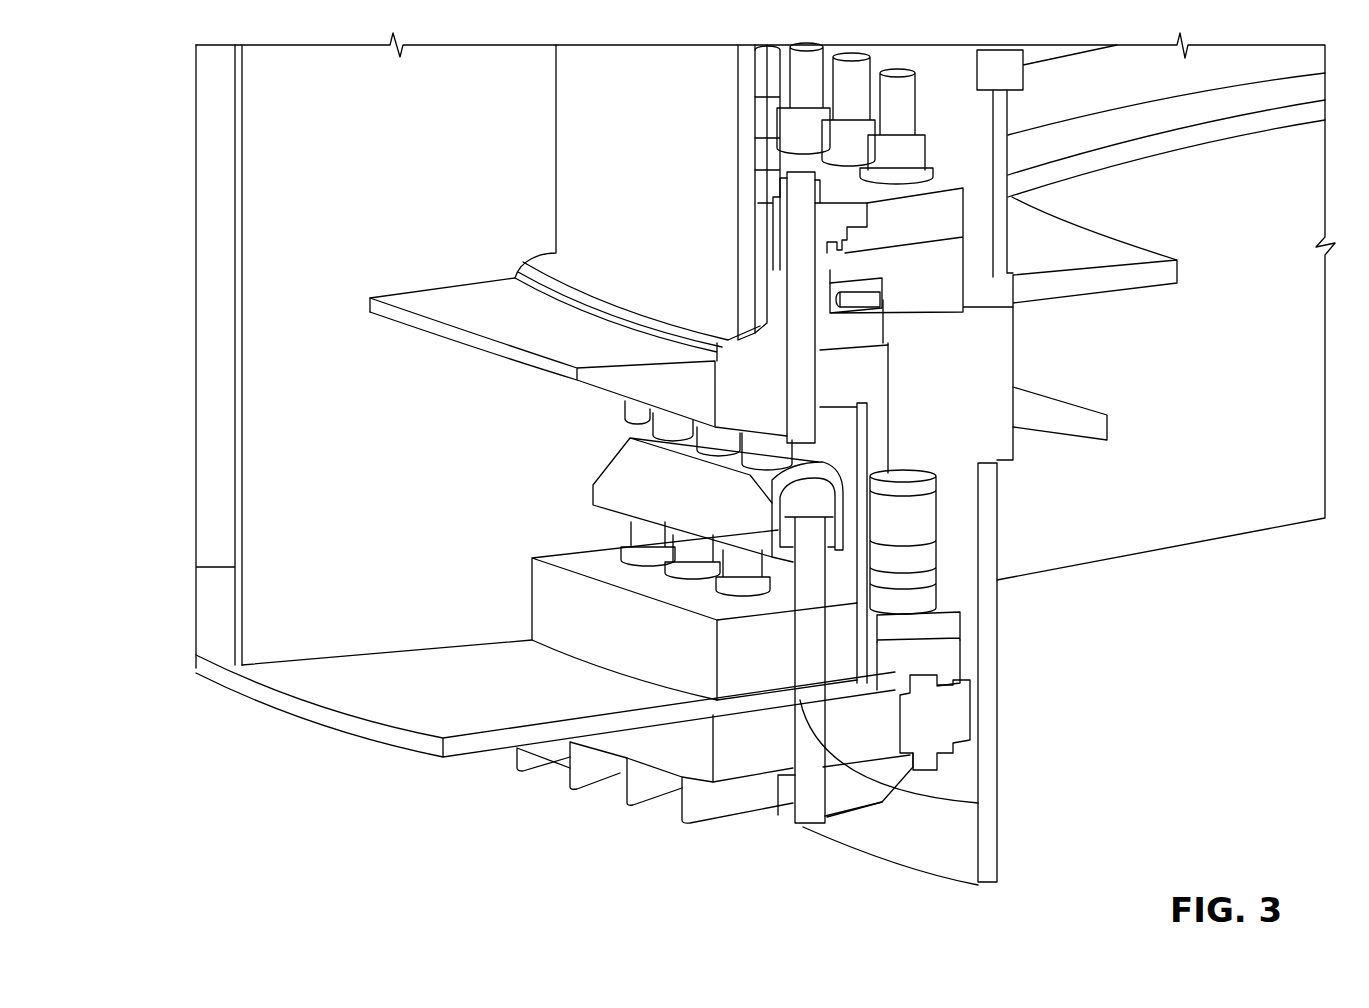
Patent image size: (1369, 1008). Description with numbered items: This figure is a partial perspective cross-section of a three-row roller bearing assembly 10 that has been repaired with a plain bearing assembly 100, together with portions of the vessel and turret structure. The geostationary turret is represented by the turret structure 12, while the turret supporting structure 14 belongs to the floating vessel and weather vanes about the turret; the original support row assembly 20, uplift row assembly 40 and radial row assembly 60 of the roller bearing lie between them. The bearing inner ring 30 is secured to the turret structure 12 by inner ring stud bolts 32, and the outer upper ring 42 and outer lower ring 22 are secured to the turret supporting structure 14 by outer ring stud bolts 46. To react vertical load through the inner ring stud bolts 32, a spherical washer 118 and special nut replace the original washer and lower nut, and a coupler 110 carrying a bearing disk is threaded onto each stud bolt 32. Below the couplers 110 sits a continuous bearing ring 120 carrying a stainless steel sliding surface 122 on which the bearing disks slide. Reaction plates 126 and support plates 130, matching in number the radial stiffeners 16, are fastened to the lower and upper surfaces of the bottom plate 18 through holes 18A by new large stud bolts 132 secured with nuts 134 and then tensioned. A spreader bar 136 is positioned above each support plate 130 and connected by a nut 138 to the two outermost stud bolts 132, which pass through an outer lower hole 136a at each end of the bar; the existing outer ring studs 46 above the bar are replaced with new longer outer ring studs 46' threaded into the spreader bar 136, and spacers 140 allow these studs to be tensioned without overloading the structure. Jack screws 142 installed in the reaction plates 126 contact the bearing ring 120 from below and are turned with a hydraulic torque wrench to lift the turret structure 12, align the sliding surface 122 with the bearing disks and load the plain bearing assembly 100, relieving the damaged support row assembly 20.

The three-row roller bearing assembly 10 is at (850, 262).
The turret structure 12 is at (998, 438).
The turret supporting structure 14 is at (620, 388).
The radial stiffener 16 is at (285, 385).
The bottom plate 18 is at (320, 712).
The holes 18A is at (997, 810).
The support row assembly 20 is at (857, 300).
The outer lower ring 22 is at (763, 313).
The bearing inner ring 30 is at (956, 255).
The inner ring stud bolt 32 is at (905, 100).
The uplift row assembly 40 is at (815, 250).
The outer upper ring 42 is at (757, 217).
The outer ring stud bolt 46 is at (874, 307).
The new longer outer ring stud 46' is at (703, 158).
The radial row assembly 60 is at (830, 283).
The plain bearing assembly 100 is at (965, 595).
The coupler 110 is at (900, 520).
The spherical washer 118 is at (905, 490).
The bearing ring 120 is at (945, 655).
The sliding surface 122 is at (925, 625).
The reaction plate 126 is at (742, 767).
The support plate 130 is at (550, 605).
The new large stud bolt 132 is at (800, 660).
The nut 134 is at (700, 560).
The spreader bar 136 is at (630, 495).
The outer lower hole 136a is at (825, 568).
The nut 138 is at (785, 526).
The spacer 140 is at (672, 429).
The jack screw 142 is at (925, 730).